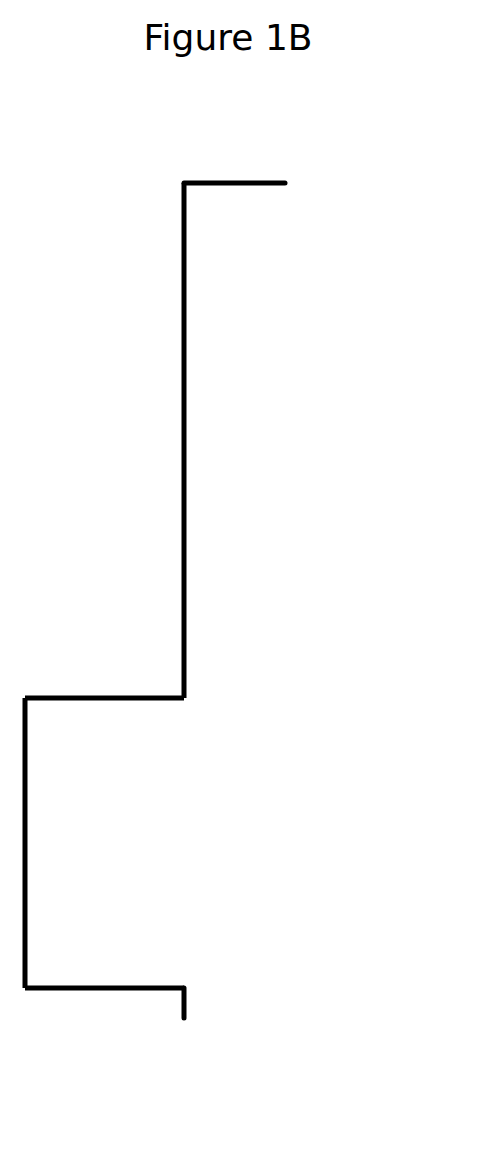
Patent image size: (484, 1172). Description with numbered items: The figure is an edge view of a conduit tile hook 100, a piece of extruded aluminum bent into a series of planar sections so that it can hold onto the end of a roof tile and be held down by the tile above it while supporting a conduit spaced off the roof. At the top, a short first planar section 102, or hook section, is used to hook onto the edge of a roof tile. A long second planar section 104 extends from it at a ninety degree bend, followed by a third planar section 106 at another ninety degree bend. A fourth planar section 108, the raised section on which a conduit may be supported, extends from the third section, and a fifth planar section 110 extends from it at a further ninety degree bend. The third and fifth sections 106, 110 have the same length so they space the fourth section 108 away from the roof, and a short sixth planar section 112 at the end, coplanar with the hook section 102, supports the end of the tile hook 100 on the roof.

The tile hook 100 is at (302, 378).
The first planar section 102 is at (250, 180).
The second planar section 104 is at (186, 497).
The third planar section 106 is at (82, 693).
The fourth planar section 108 is at (27, 865).
The fifth planar section 110 is at (92, 993).
The sixth planar section 112 is at (187, 1003).